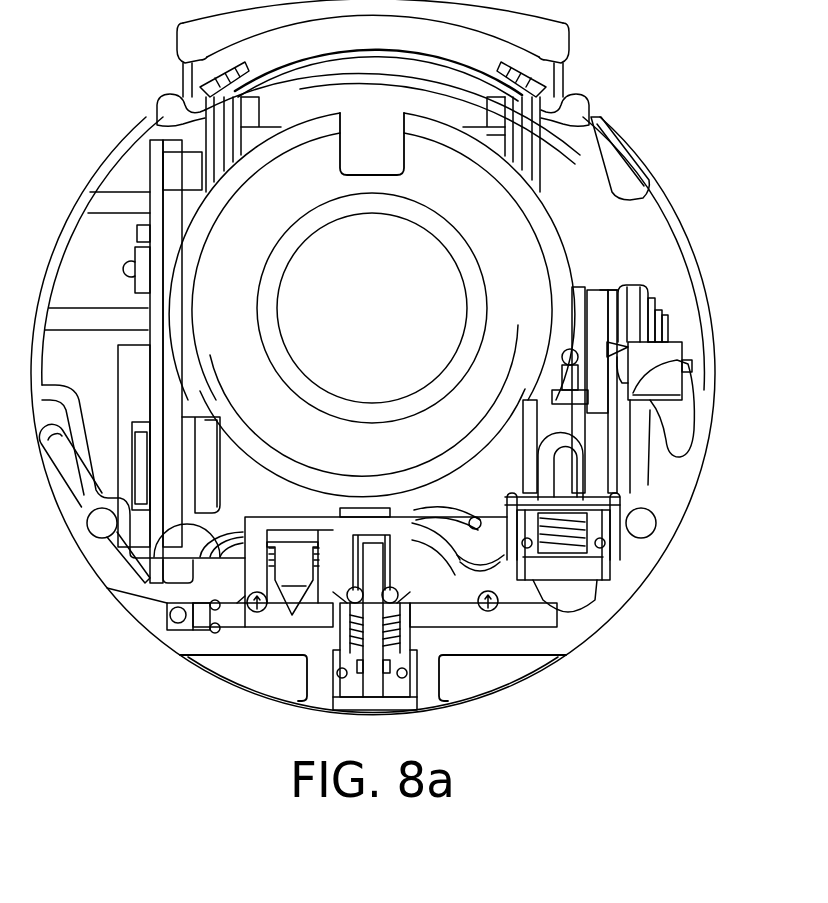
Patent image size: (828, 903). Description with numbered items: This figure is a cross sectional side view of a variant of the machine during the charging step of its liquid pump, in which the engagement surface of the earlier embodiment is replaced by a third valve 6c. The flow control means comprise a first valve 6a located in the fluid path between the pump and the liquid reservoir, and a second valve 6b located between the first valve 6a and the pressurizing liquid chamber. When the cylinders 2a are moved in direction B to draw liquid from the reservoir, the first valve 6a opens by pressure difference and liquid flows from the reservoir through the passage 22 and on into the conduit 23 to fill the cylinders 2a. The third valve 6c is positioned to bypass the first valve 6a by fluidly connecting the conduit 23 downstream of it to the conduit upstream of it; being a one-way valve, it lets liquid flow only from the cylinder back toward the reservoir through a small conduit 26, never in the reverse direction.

The cylinders 2a is at (107, 588).
The first valve 6a is at (414, 591).
The second valve 6b is at (577, 597).
The third valve 6c is at (216, 606).
The passage 22 is at (395, 566).
The conduit 23 is at (268, 630).
The small conduit 26 is at (355, 578).
The direction B is at (312, 632).